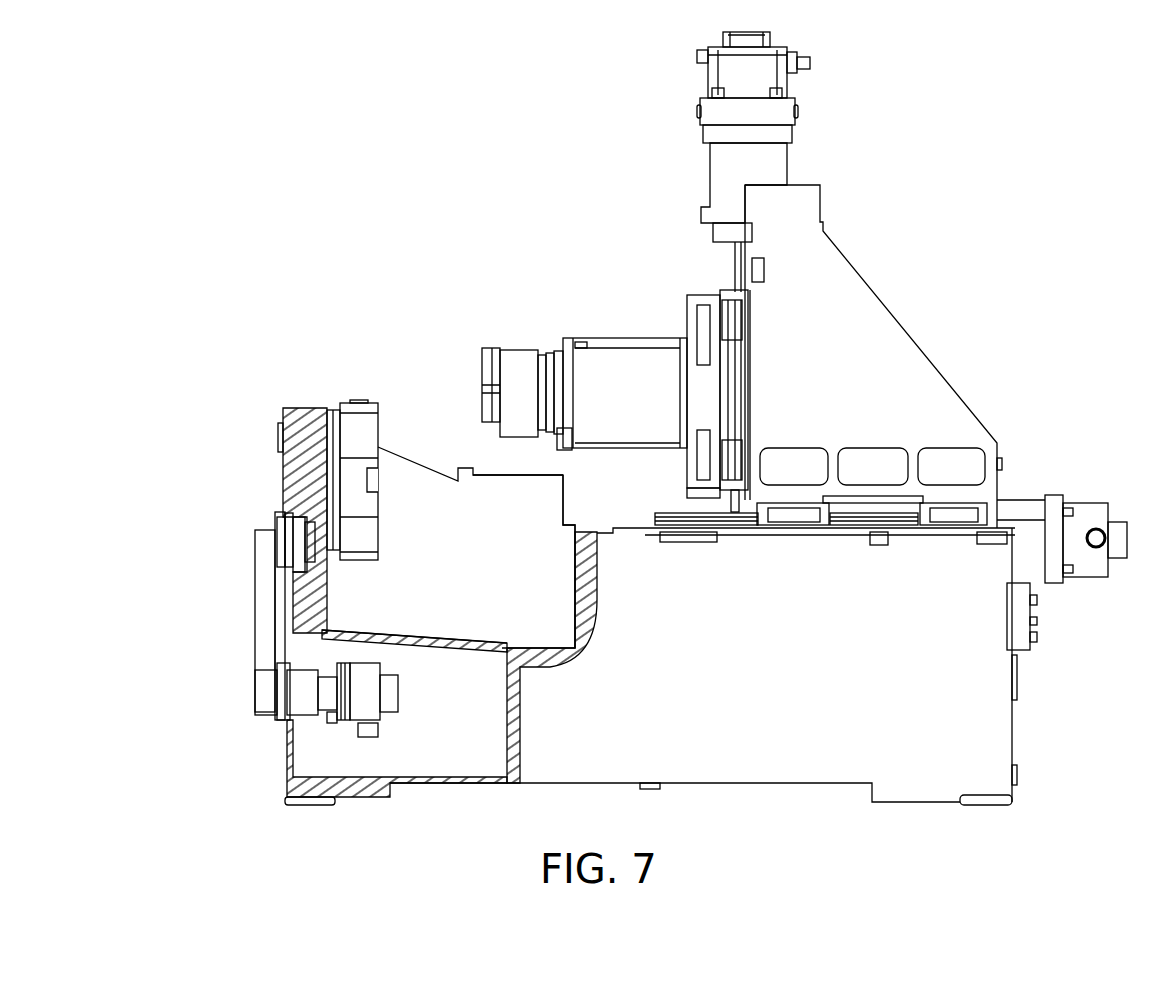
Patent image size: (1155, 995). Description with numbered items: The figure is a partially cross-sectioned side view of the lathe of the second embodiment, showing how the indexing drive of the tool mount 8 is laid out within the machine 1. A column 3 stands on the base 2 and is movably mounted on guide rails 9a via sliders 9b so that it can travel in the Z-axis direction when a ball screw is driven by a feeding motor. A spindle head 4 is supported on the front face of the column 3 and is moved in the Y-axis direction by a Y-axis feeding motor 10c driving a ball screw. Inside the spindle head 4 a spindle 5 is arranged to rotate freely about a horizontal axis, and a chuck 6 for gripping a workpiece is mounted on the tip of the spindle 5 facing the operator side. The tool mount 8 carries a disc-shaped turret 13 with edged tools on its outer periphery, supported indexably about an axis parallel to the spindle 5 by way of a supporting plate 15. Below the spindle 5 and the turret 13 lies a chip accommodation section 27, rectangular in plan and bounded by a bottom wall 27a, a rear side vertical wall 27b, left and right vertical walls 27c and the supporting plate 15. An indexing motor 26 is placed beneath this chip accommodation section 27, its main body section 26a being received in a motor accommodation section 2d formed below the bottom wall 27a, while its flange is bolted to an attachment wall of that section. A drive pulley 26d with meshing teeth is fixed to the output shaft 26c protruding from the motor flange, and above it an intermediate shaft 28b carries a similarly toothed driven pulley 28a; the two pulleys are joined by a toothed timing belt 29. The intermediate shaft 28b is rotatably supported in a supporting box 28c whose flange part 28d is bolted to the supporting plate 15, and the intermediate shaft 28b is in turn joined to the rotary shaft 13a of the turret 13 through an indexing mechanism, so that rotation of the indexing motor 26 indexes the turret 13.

The machine 1 is at (874, 184).
The base 2 is at (1040, 672).
The motor accommodation section 2d is at (494, 756).
The column 3 is at (915, 347).
The spindle head 4 is at (650, 338).
The spindle 5 is at (558, 352).
The chuck 6 is at (516, 348).
The tool mount 8 is at (298, 392).
The guide rail 9a is at (728, 520).
The slider 9b is at (793, 518).
The Y-axis feeding motor 10c is at (798, 112).
The turret 13 is at (365, 398).
The rotary shaft 13a is at (333, 475).
The supporting plate 15 is at (283, 470).
The indexing motor 26 is at (410, 680).
The main body section 26a is at (388, 704).
The output shaft 26c is at (255, 680).
The drive pulley 26d is at (255, 717).
The chip accommodation section 27 is at (558, 621).
The bottom wall 27a is at (447, 633).
The rear side vertical wall 27b is at (577, 557).
The vertical wall 27c is at (446, 530).
The driven pulley 28a is at (250, 567).
The intermediate shaft 28b is at (250, 553).
The supporting box 28c is at (303, 560).
The flange part 28d is at (283, 518).
The toothed timing belt 29 is at (255, 609).